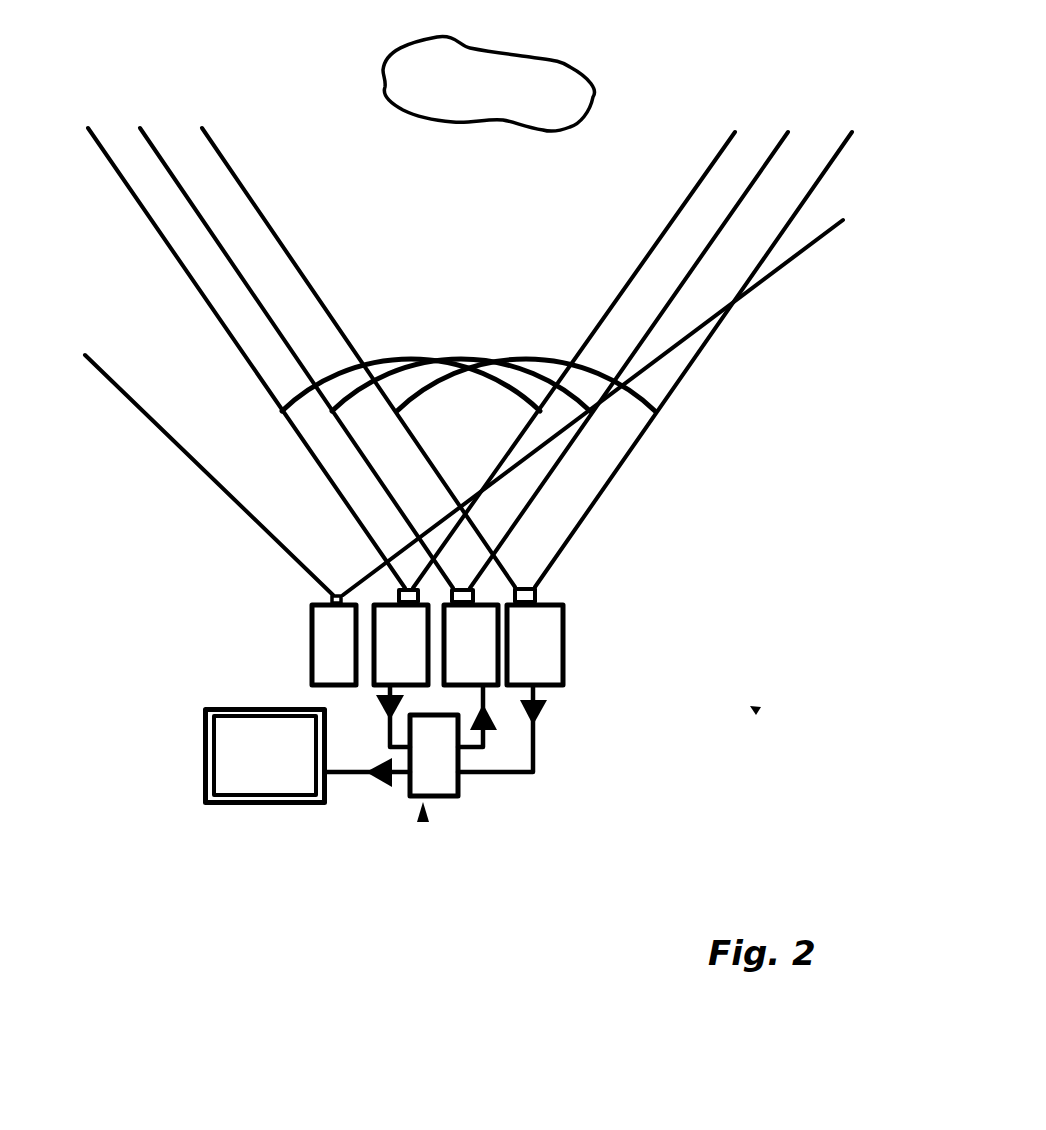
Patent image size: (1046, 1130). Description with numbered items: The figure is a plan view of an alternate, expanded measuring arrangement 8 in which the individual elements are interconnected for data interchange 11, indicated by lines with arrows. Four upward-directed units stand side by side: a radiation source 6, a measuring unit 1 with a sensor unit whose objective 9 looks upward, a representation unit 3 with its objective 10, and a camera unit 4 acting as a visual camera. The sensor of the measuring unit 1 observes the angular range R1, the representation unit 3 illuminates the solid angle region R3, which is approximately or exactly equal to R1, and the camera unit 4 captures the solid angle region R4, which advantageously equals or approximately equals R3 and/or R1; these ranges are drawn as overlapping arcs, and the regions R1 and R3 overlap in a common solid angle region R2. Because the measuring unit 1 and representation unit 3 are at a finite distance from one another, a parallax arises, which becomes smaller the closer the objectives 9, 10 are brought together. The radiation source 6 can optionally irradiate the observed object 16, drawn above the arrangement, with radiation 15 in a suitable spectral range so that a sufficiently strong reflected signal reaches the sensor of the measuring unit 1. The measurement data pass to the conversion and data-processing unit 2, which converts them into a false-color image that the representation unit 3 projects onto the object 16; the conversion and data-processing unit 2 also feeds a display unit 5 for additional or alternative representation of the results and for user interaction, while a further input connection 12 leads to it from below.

The measuring unit 1 is at (387, 670).
The conversion and data-processing unit 2 is at (440, 787).
The representation unit 3 is at (485, 673).
The camera unit 4 is at (548, 634).
The display unit 5 is at (238, 782).
The radiation source 6 is at (323, 649).
The measuring arrangement 8 is at (755, 709).
The objective 9 is at (397, 593).
The objective 10 is at (460, 592).
The data interchange 11 is at (538, 755).
The input connection 12 is at (423, 818).
The radiation 15 is at (165, 410).
The object 16 is at (567, 78).
The angular range R1 is at (378, 355).
The common solid angle region R2 is at (440, 540).
The solid angle region R3 is at (480, 355).
The solid angle region R4 is at (550, 355).